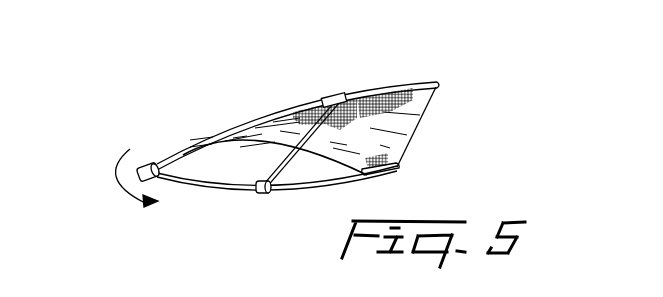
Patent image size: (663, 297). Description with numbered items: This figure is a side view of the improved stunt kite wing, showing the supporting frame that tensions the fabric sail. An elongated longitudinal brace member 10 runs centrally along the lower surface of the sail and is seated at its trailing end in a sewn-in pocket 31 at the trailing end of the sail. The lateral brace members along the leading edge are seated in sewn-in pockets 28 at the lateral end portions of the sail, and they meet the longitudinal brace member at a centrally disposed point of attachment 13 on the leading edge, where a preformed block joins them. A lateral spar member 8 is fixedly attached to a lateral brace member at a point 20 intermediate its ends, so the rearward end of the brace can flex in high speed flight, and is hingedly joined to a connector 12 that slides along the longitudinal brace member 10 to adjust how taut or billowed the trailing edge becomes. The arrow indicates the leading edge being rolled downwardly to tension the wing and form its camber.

The lateral spar member 8 is at (298, 151).
The longitudinal brace member 10 is at (217, 189).
The connector 12 is at (261, 193).
The point of attachment 13 is at (144, 164).
The point 20 is at (338, 98).
The sewn-in pocket 28 is at (430, 83).
The sewn-in pocket 31 is at (399, 171).